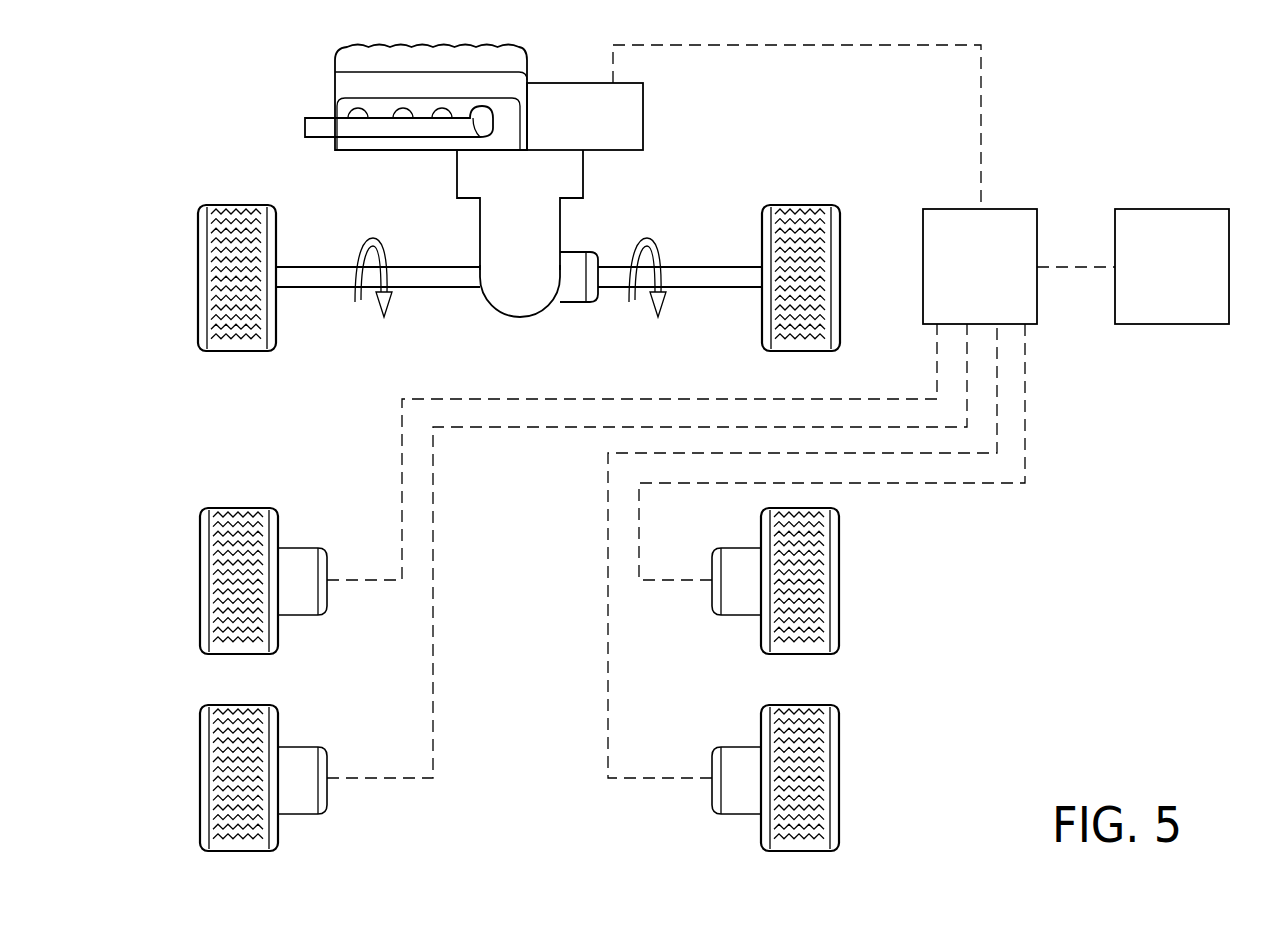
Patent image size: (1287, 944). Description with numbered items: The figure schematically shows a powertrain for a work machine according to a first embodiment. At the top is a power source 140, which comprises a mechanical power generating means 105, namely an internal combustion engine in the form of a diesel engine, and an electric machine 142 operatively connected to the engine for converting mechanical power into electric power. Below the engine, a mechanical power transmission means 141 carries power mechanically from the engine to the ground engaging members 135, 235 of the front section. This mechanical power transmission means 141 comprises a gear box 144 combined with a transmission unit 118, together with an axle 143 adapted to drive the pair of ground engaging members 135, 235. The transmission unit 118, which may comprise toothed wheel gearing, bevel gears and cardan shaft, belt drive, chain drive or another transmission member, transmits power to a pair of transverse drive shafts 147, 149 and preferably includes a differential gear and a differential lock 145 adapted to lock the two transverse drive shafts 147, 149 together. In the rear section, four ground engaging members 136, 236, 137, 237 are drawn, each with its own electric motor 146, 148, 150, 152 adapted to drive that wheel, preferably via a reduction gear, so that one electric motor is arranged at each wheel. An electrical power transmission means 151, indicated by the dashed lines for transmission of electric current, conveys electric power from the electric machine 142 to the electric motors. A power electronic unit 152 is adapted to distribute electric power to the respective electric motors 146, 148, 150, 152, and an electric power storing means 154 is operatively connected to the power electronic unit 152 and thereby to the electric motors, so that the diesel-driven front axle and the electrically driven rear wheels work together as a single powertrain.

The mechanical power generating means 105 is at (355, 83).
The power source 140 is at (672, 104).
The mechanical power transmission means 141 is at (776, 153).
The electric machine 142 is at (625, 128).
The gear box 144 is at (567, 168).
The transmission unit 118 is at (523, 290).
The differential lock 145 is at (577, 288).
The transverse drive shaft 147 is at (307, 277).
The transverse drive shaft 149 is at (695, 278).
The axle 143 is at (676, 338).
The ground engaging member 135 is at (200, 275).
The ground engaging member 235 is at (838, 235).
The ground engaging member 136 is at (203, 578).
The ground engaging member 137 is at (203, 777).
The ground engaging member 236 is at (835, 580).
The ground engaging member 237 is at (835, 778).
The electric motor 146 is at (300, 605).
The electric motor 150 is at (300, 802).
The electric motor 148 is at (740, 605).
The power electronic unit 152 is at (1003, 225).
The electric power storing means 154 is at (1180, 225).
The electrical power transmission means 151 is at (1045, 100).